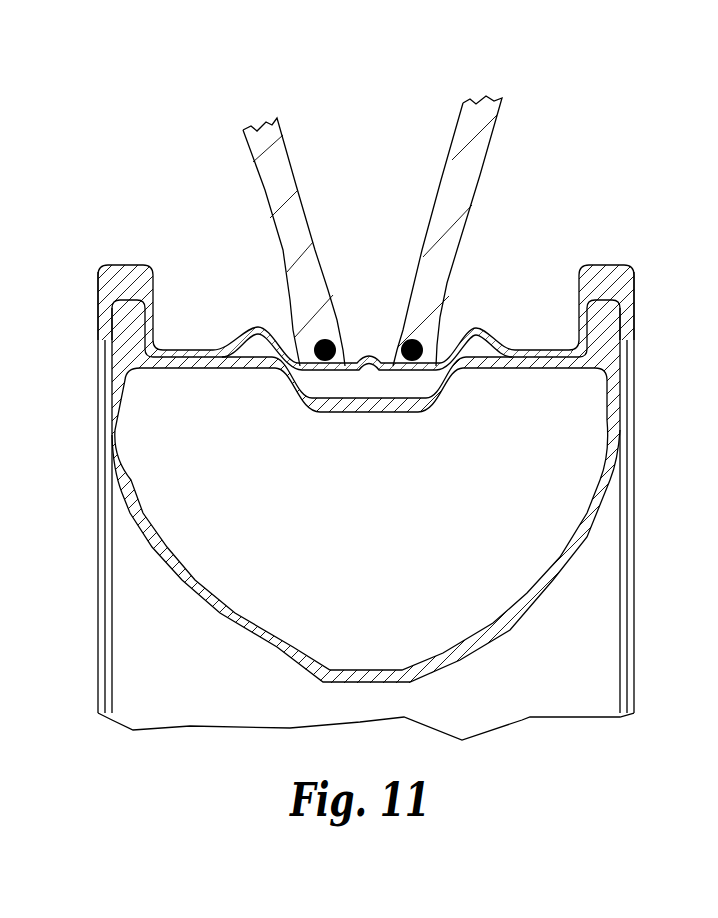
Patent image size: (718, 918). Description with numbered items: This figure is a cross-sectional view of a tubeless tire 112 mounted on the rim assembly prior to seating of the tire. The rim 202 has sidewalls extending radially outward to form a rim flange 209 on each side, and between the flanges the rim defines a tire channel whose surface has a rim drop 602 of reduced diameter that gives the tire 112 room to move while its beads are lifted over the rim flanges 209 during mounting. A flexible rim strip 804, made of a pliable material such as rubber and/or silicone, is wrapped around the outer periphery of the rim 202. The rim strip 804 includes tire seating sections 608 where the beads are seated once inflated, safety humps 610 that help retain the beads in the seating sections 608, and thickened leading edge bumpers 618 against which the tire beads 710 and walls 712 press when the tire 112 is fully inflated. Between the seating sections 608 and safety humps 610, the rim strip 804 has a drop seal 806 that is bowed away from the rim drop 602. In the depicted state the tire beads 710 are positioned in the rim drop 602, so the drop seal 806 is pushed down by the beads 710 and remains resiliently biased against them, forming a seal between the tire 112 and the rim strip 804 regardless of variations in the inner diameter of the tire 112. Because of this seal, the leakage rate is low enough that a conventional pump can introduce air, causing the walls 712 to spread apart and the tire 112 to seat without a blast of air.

The tire 112 is at (246, 144).
The walls of the tire 712 is at (256, 172).
The leading edge bumper 618 is at (135, 272).
The safety hump 610 is at (228, 345).
The tire bead 710 is at (311, 340).
The rim drop 602 is at (472, 297).
The rim strip 804 is at (620, 283).
The rim flange 209 is at (607, 325).
The tire seating section 608 is at (178, 358).
The drop seal 806 is at (387, 366).
The rim 202 is at (592, 518).